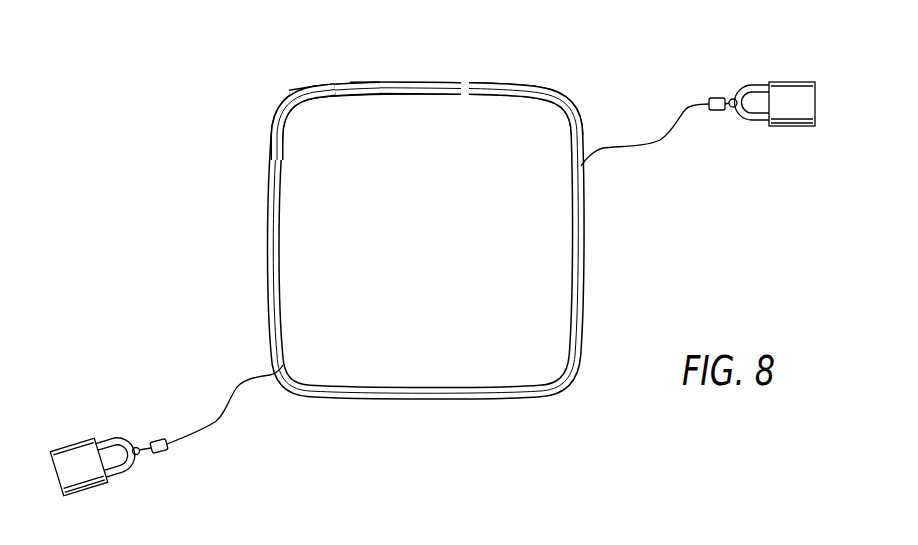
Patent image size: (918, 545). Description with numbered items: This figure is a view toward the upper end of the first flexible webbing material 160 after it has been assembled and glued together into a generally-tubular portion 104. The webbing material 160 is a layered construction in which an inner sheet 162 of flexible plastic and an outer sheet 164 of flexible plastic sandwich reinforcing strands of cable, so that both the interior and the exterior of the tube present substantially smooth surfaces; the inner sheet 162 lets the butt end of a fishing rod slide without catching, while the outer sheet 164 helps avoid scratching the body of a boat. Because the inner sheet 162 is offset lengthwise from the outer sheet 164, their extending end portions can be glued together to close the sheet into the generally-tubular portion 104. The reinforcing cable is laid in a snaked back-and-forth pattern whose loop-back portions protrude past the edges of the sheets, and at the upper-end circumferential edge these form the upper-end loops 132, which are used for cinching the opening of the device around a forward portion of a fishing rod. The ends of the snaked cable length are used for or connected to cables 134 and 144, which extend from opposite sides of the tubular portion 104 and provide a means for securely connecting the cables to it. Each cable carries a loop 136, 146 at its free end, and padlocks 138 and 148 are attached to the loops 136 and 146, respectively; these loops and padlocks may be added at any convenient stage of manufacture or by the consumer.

The generally-tubular portion 104 is at (428, 80).
The upper-end loops 132 is at (323, 87).
The cable 134 is at (218, 425).
The loop 136 is at (141, 441).
The padlock 138 is at (80, 438).
The cable 144 is at (662, 143).
The loop 146 is at (732, 99).
The padlock 148 is at (789, 93).
The first flexible webbing material 160 is at (532, 88).
The inner sheet 162 is at (340, 98).
The outer sheet 164 is at (402, 58).